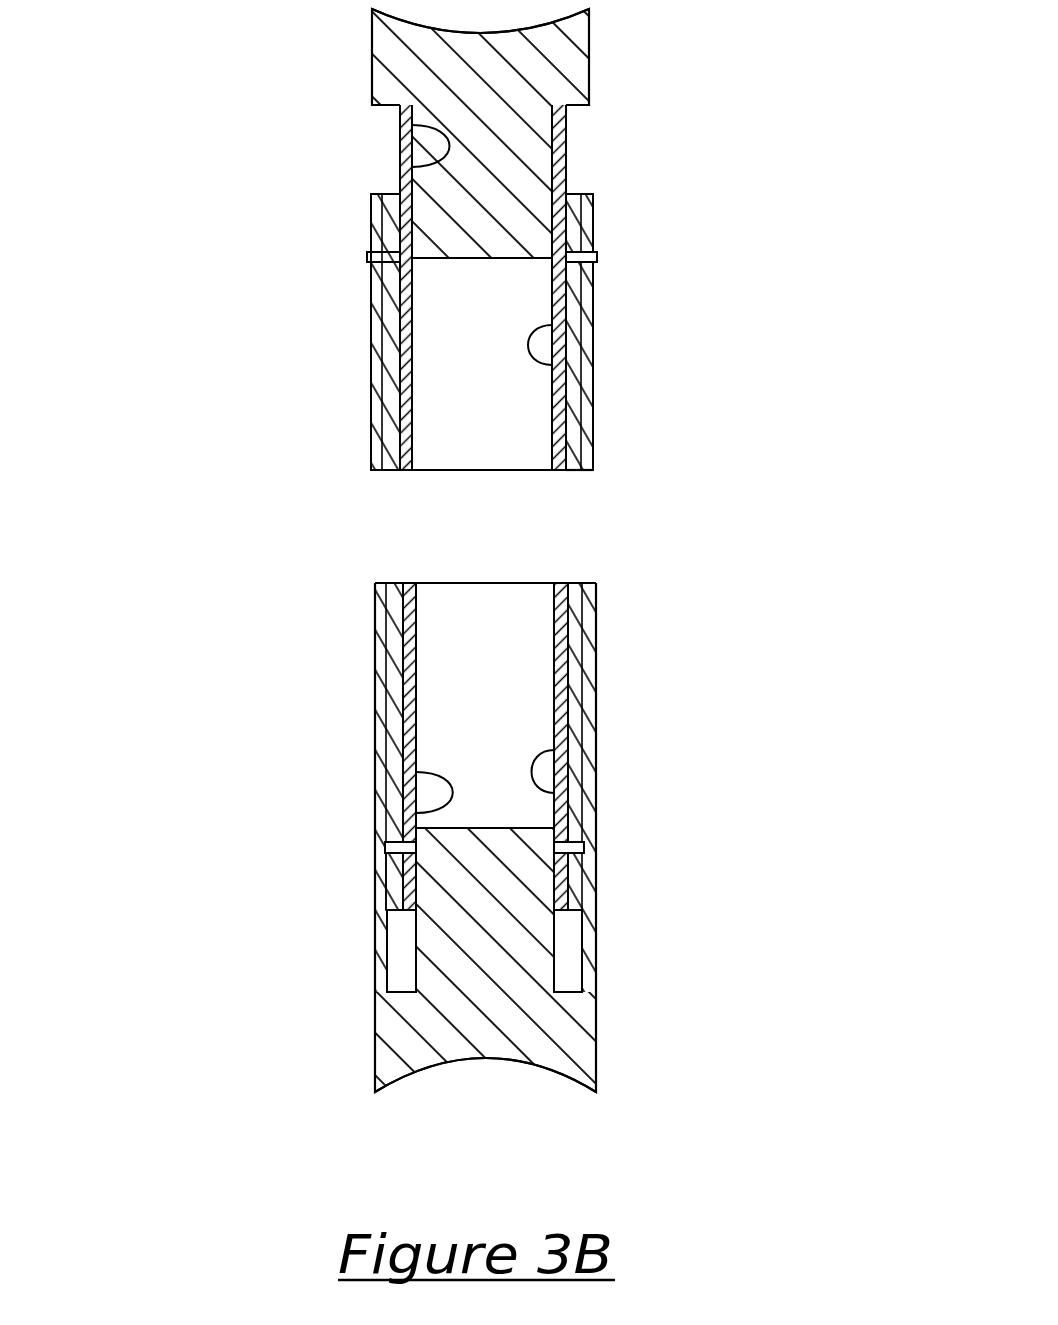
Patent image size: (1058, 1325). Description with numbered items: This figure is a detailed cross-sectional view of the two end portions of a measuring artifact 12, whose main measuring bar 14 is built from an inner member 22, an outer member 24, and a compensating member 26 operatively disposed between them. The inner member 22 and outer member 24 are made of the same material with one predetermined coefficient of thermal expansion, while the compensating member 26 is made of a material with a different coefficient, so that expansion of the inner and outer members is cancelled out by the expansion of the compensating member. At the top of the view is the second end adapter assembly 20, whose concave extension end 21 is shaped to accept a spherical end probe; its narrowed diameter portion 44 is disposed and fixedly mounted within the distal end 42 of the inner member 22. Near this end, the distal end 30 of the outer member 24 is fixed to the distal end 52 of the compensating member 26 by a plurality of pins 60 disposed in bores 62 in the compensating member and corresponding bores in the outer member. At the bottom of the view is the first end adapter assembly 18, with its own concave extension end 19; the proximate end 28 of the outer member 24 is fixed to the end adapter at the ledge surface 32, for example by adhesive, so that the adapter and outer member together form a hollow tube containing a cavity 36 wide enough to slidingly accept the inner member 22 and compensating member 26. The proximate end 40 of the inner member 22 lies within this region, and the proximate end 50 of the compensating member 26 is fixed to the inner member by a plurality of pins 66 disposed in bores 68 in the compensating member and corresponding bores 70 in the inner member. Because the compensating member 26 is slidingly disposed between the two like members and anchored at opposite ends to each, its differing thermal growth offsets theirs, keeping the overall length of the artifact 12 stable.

The artifact 12 is at (414, 258).
The main measuring bar 14 is at (537, 814).
The first end adapter assembly 18 is at (395, 1048).
The extension end 19 is at (578, 1065).
The second end adapter assembly 20 is at (570, 52).
The extension end 21 is at (373, 52).
The inner member 22 is at (403, 472).
The outer member 24 is at (587, 472).
The compensating member 26 is at (574, 583).
The proximate end 28 is at (596, 912).
The distal end 30 is at (593, 311).
The ledge surface 32 is at (372, 1018).
The cavity 36 is at (568, 950).
The proximate end 40 is at (412, 775).
The distal end 42 is at (566, 135).
The narrowed diameter portion 44 is at (400, 165).
The proximate end 50 is at (556, 752).
The distal end 52 is at (556, 356).
The pins 60 is at (586, 257).
The bores 62 is at (382, 240).
The pins 66 is at (372, 298).
The bores 68 is at (385, 840).
The bores 70 is at (392, 895).